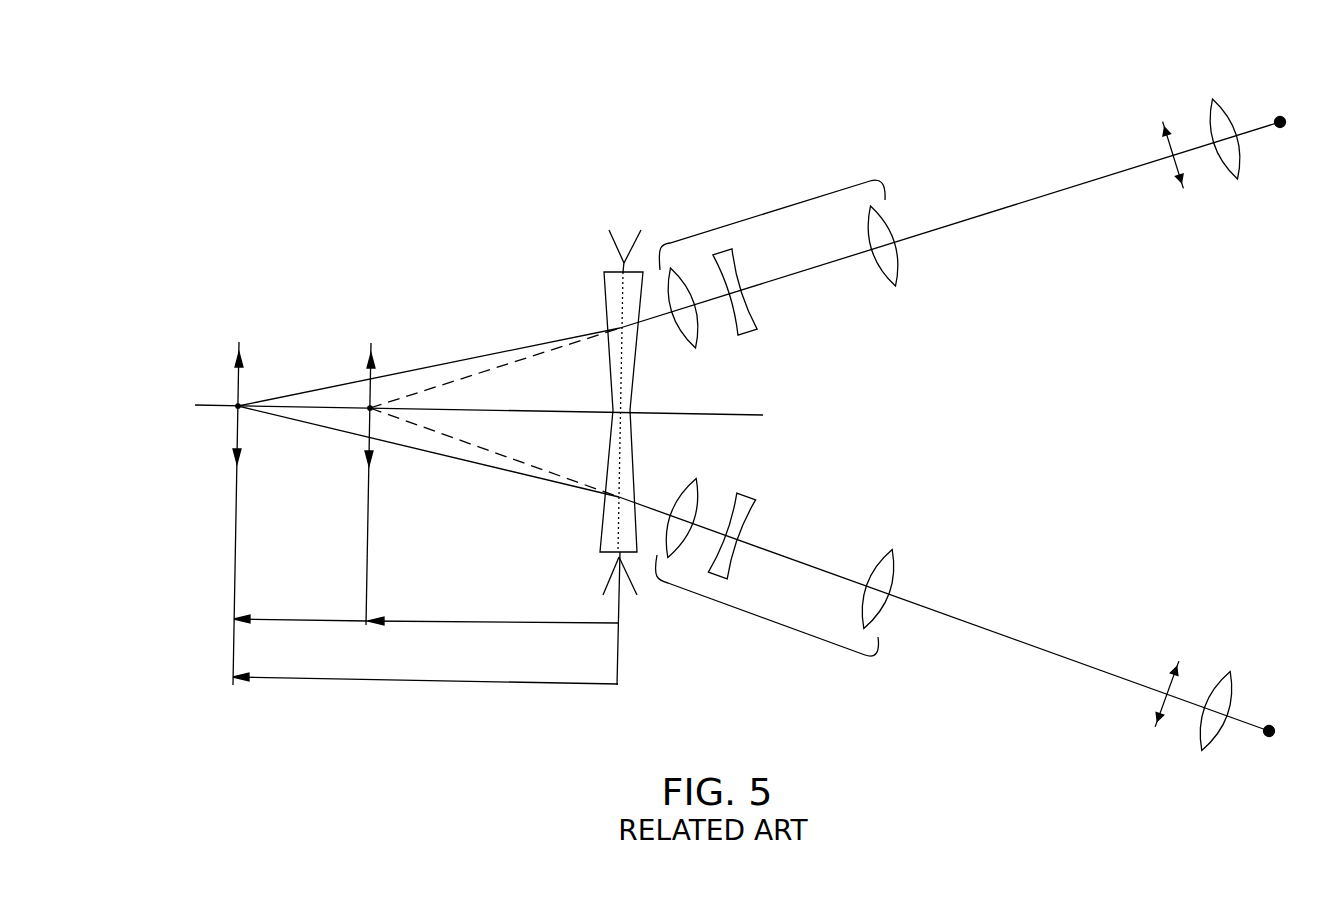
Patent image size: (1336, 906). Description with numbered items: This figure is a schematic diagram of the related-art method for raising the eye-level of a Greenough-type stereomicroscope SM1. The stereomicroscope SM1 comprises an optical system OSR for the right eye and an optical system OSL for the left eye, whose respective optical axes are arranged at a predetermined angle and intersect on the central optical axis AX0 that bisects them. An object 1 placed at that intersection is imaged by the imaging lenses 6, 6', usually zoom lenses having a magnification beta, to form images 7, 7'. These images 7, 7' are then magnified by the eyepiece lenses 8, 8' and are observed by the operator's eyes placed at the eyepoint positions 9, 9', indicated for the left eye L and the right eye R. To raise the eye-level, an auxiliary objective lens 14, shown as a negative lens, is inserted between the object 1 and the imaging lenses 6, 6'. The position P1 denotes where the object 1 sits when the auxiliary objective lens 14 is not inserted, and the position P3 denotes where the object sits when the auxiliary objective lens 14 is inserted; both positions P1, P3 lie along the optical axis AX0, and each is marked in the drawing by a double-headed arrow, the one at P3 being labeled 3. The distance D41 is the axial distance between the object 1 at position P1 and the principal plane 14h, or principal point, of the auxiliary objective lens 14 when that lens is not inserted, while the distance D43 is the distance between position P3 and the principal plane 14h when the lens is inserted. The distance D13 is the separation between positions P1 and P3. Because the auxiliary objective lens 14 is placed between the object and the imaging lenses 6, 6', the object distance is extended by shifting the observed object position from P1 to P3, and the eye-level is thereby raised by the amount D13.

The aperture stop (third stop) 3 is at (236, 378).
The object 1 is at (368, 364).
The position of object when auxiliary objective lens is inserted P3 is at (240, 410).
The position of object when auxiliary objective lens is not inserted P1 is at (373, 411).
The auxiliary objective lens 14 is at (607, 302).
The principal plane 14h is at (621, 272).
The Greenough-type stereomicroscope SM1 is at (722, 152).
The imaging lens 6' is at (778, 249).
The imaging lens 6 is at (774, 589).
The optical axis AX0 is at (733, 415).
The optical system for the right eye OSR is at (1025, 302).
The optical system for the left eye OSL is at (975, 535).
The image 7' is at (1150, 155).
The eyepiece lens 8' is at (1212, 113).
The eyepoint position 9' is at (1298, 103).
The right eye R is at (1298, 151).
The image 7 is at (1143, 694).
The eyepiece lens 8 is at (1205, 741).
The eyepoint position 9 is at (1289, 714).
The left eye L is at (1281, 761).
The distance between positions P1 and P3 D13 is at (301, 606).
The axial distance between object at P1 and principal plane D41 is at (493, 607).
The distance between position P3 and principal plane D43 is at (425, 665).